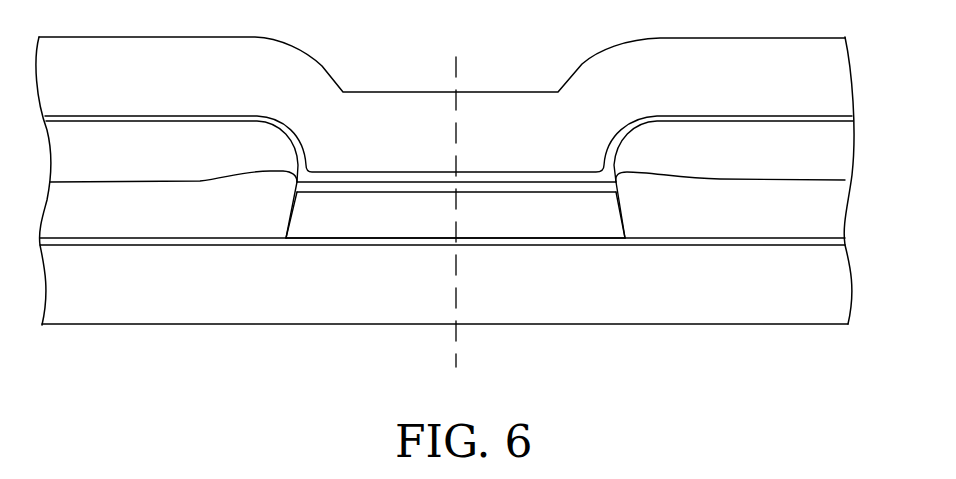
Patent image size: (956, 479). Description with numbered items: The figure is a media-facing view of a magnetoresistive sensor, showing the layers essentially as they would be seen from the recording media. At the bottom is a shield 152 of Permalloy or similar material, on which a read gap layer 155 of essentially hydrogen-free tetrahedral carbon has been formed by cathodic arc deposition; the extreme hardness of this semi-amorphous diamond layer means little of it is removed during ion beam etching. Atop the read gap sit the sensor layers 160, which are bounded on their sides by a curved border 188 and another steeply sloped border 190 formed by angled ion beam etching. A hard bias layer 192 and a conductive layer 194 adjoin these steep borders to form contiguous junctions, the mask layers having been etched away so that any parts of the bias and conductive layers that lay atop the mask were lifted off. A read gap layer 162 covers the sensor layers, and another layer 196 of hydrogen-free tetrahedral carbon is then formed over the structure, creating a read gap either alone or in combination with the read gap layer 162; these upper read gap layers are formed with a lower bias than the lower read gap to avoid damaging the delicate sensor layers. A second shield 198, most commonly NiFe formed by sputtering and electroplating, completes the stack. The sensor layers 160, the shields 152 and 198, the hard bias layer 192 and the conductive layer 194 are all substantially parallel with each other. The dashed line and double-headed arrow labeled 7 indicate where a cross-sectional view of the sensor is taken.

The shield 152 is at (420, 302).
The read gap layer 155 is at (348, 243).
The sensor layers 160 is at (527, 227).
The read gap layer 162 is at (352, 188).
The curved border 188 is at (638, 209).
The steeply sloped border 190 is at (276, 210).
The hard bias layer 192 is at (112, 225).
The conductive layer 194 is at (180, 158).
The layer of hydrogen-free tetrahedral carbon 196 is at (560, 180).
The second shield 198 is at (212, 88).
The double-headed arrow 7 is at (456, 39).